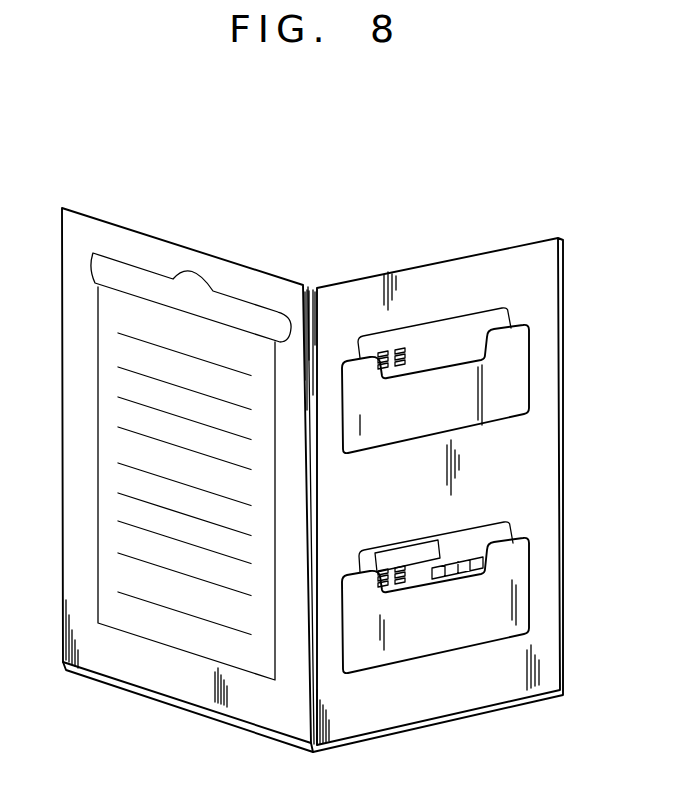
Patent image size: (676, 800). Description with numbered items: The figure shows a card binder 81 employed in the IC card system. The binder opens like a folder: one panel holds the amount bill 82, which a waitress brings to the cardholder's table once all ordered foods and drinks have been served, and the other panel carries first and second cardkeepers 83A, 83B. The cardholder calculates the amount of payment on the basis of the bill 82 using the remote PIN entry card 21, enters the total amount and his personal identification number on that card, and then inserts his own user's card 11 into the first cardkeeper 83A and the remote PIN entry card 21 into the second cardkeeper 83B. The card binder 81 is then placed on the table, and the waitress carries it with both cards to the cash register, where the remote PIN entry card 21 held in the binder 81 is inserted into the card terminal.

The card binder 81 is at (240, 262).
The amount bill 82 is at (107, 396).
The first cardkeeper 83A is at (524, 339).
The second cardkeeper 83B is at (524, 552).
The user's card 11 is at (503, 316).
The remote PIN entry card 21 is at (503, 522).